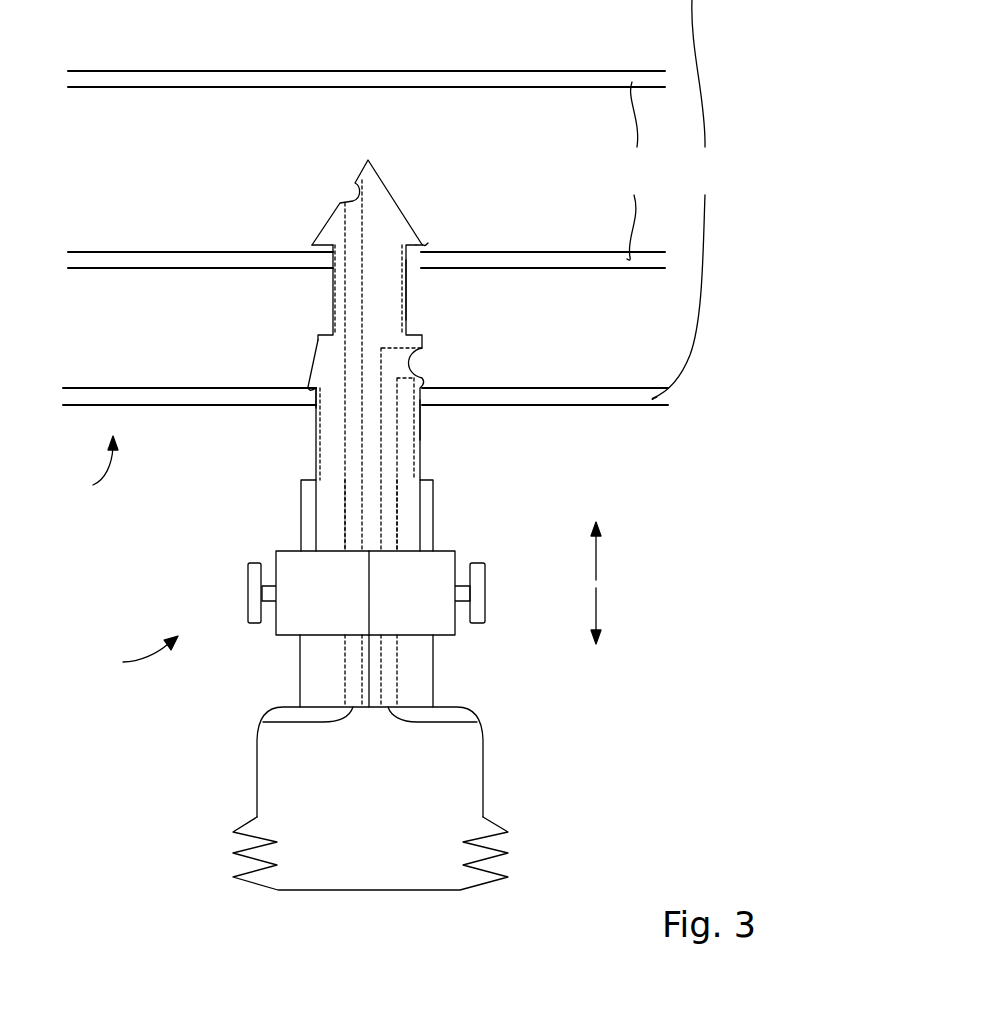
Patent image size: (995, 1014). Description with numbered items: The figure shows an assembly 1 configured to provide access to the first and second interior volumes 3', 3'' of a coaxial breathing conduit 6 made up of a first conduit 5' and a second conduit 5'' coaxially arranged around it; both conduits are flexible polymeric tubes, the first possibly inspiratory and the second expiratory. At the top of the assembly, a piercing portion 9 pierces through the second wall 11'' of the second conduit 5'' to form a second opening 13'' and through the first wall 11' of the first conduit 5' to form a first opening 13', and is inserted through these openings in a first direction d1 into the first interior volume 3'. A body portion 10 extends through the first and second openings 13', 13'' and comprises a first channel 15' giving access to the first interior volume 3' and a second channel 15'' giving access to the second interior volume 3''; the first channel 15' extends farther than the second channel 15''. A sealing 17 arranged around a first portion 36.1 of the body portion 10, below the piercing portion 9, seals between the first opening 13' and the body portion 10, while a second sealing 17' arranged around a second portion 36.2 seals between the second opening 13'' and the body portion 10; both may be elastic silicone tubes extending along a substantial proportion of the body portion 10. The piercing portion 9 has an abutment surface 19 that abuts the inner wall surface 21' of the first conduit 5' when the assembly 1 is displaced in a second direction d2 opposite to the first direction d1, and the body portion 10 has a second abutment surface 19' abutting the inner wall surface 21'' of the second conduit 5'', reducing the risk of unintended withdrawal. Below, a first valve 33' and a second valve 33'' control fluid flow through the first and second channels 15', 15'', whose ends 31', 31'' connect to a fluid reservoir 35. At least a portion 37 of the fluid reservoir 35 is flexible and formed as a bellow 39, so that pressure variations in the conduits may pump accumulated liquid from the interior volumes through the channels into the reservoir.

The assembly 1 is at (142, 658).
The first interior volume 3' is at (366, 130).
The second interior volume 3'' is at (577, 327).
The first conduit 5' is at (639, 171).
The second conduit 5'' is at (693, 199).
The coaxial breathing conduit 6 is at (97, 467).
The piercing portion 9 is at (385, 197).
The body portion 10 is at (328, 527).
The first wall 11' is at (200, 235).
The second wall 11'' is at (189, 372).
The first opening 13' is at (291, 228).
The second opening 13'' is at (269, 422).
The first channel 15' is at (290, 515).
The second channel 15'' is at (455, 515).
The sealing 17 is at (435, 290).
The second sealing 17' is at (462, 423).
The abutment surface 19 is at (440, 215).
The second abutment surface 19' is at (278, 360).
The inner wall surface of the first conduit 21' is at (543, 232).
The inner wall surface of the second conduit 21'' is at (545, 370).
The end of the first channel 31' is at (271, 724).
The end of the second channel 31'' is at (475, 725).
The first valve 33' is at (308, 593).
The second valve 33'' is at (427, 629).
The fluid reservoir 35 is at (390, 787).
The first portion of the body portion 36.1 is at (340, 288).
The second portion of the body portion 36.2 is at (407, 472).
The flexible portion 37 is at (532, 860).
The bellow 39 is at (488, 853).
The first direction d1 is at (597, 568).
The second direction d2 is at (597, 618).